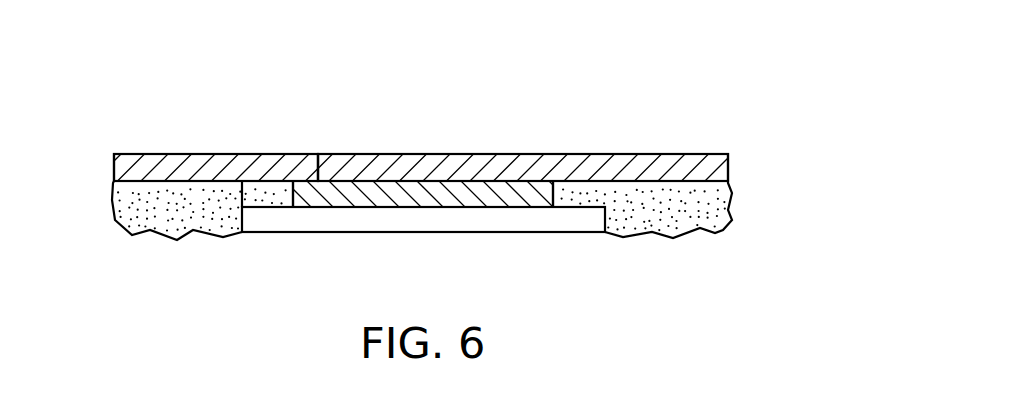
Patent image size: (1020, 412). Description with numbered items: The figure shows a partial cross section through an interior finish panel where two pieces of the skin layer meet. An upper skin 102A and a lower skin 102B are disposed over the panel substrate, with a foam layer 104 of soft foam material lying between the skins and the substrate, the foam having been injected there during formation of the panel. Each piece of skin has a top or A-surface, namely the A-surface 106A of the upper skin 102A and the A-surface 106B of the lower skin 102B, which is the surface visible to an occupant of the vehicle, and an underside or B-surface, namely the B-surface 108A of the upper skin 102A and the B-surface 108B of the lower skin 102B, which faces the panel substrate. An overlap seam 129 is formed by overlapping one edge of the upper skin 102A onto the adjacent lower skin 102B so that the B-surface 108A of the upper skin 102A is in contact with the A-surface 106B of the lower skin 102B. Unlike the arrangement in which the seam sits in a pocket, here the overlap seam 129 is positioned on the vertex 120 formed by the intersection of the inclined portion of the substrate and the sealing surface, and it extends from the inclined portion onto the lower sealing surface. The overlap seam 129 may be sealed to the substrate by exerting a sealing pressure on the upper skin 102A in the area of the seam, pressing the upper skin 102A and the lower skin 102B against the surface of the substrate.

The upper skin 102A is at (690, 147).
The lower skin 102B is at (147, 147).
The foam layer 104 is at (724, 202).
The A-surface of upper skin 106A is at (553, 153).
The A-surface of lower skin 106B is at (239, 155).
The B-surface of upper skin 108A is at (500, 181).
The B-surface of lower skin 108B is at (367, 207).
The vertex 120 is at (290, 240).
The overlap seam 129 is at (378, 123).